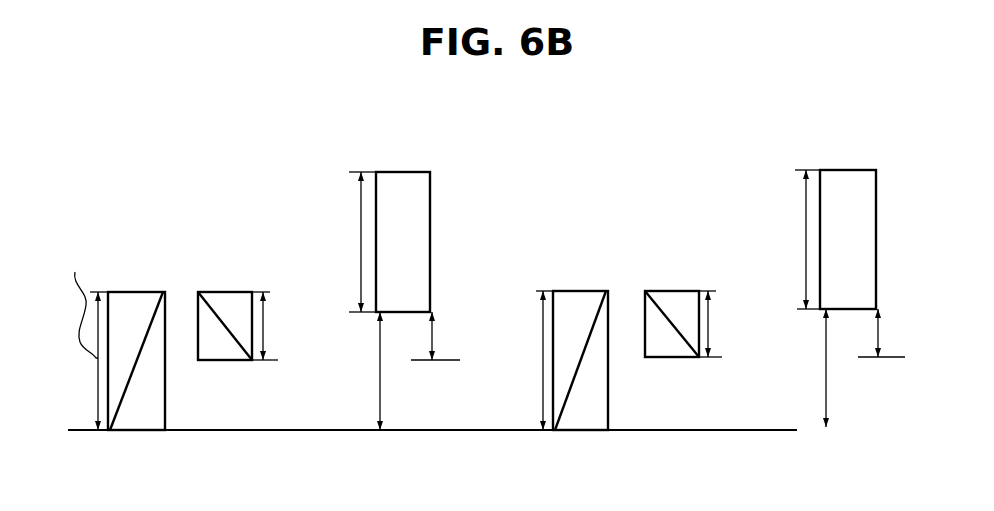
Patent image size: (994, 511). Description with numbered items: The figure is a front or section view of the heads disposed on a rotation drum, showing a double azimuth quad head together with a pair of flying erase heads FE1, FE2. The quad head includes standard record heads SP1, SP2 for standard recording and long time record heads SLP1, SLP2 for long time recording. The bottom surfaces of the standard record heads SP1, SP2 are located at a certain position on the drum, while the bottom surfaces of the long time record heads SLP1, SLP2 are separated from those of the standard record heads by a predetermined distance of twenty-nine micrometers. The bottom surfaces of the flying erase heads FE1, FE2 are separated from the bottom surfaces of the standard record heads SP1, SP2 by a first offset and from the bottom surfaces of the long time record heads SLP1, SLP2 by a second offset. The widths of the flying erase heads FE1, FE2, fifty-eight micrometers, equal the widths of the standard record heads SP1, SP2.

The standard record head SP1 is at (122, 372).
The long time record head SLP2 is at (271, 357).
The flying erase head FE1 is at (395, 301).
The standard record head SP2 is at (545, 392).
The long time record head SLP1 is at (716, 356).
The flying erase head FE2 is at (832, 269).